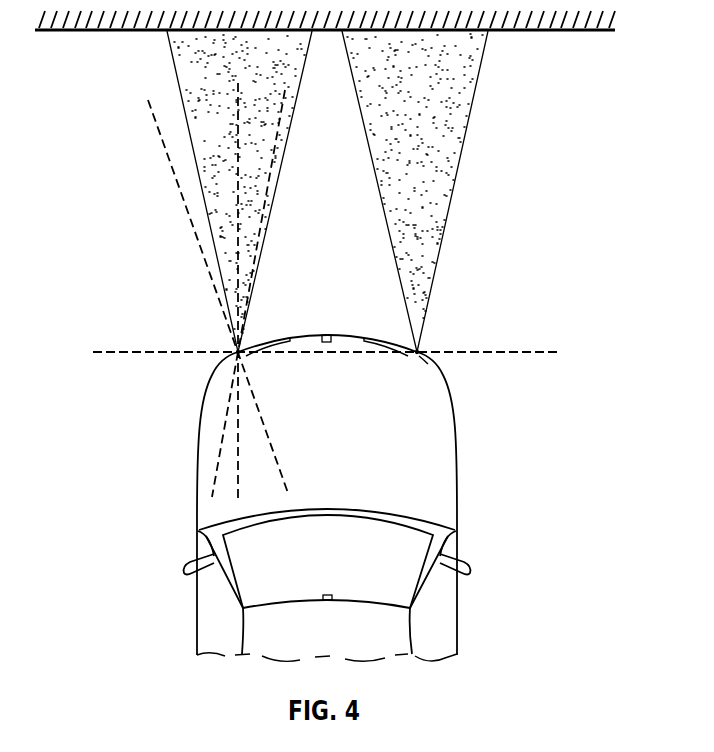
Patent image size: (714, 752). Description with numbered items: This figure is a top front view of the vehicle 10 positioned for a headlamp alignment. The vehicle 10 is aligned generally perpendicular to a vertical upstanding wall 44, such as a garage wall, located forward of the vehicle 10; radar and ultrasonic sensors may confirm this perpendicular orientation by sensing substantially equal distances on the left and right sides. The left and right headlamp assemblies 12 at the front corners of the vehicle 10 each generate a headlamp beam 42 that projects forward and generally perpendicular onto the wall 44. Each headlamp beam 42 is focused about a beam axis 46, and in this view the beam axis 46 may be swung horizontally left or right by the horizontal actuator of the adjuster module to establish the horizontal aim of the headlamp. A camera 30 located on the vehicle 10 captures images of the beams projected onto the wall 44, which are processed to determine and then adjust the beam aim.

The vehicle 10 is at (460, 403).
The headlamp assembly 12 is at (236, 350).
The camera 30 is at (326, 594).
The headlamp beam 42 is at (214, 123).
The wall 44 is at (580, 31).
The beam axis 46 is at (239, 182).